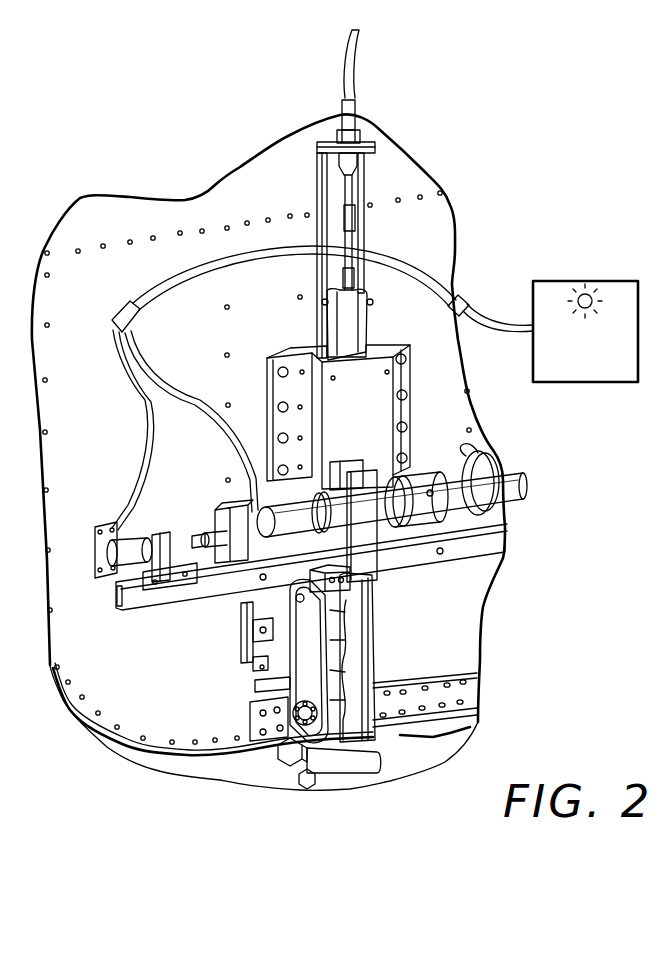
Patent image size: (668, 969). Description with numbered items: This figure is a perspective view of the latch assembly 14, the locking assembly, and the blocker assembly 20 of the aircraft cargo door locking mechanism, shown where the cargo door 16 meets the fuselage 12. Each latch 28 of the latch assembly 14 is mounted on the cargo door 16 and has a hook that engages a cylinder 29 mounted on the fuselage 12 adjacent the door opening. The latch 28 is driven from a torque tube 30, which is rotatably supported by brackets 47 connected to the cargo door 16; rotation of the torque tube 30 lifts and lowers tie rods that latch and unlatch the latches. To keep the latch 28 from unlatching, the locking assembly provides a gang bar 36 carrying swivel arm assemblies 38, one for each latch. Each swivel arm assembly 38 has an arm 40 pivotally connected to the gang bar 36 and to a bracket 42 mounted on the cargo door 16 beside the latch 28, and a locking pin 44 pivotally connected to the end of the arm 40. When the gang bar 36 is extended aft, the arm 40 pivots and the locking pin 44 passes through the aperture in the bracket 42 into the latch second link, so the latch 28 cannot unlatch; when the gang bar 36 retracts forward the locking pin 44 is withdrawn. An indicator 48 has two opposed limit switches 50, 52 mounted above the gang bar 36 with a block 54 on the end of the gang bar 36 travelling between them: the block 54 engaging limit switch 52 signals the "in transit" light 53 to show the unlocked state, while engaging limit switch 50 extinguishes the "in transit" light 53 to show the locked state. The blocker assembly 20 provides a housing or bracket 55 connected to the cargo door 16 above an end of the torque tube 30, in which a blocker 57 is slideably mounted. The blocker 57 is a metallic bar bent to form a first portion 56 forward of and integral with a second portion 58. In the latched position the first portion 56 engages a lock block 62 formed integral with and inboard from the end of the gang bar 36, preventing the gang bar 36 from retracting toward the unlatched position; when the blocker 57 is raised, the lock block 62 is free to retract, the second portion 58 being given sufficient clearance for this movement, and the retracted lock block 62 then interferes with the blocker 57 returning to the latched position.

The fuselage 12 is at (245, 752).
The latch assembly 14 is at (447, 664).
The cargo door 16 is at (131, 275).
The blocker assembly 20 is at (355, 210).
The latch 28 is at (372, 638).
The cylinder 29 is at (326, 740).
The torque tube 30 is at (507, 471).
The gang bar 36 is at (507, 523).
The swivel arm assembly 38 is at (260, 660).
The arm 40 is at (260, 602).
The bracket 42 is at (260, 630).
The locking pin 44 is at (280, 685).
The bracket 47 is at (484, 467).
The indicator 48 is at (108, 526).
The limit switch 50 is at (106, 550).
The limit switch 52 is at (208, 530).
The "in transit" light 53 is at (565, 280).
The block 54 is at (165, 543).
The housing or bracket 55 is at (410, 408).
The first portion 56 is at (338, 322).
The blocker 57 is at (372, 320).
The second portion 58 is at (373, 547).
The lock block 62 is at (342, 566).